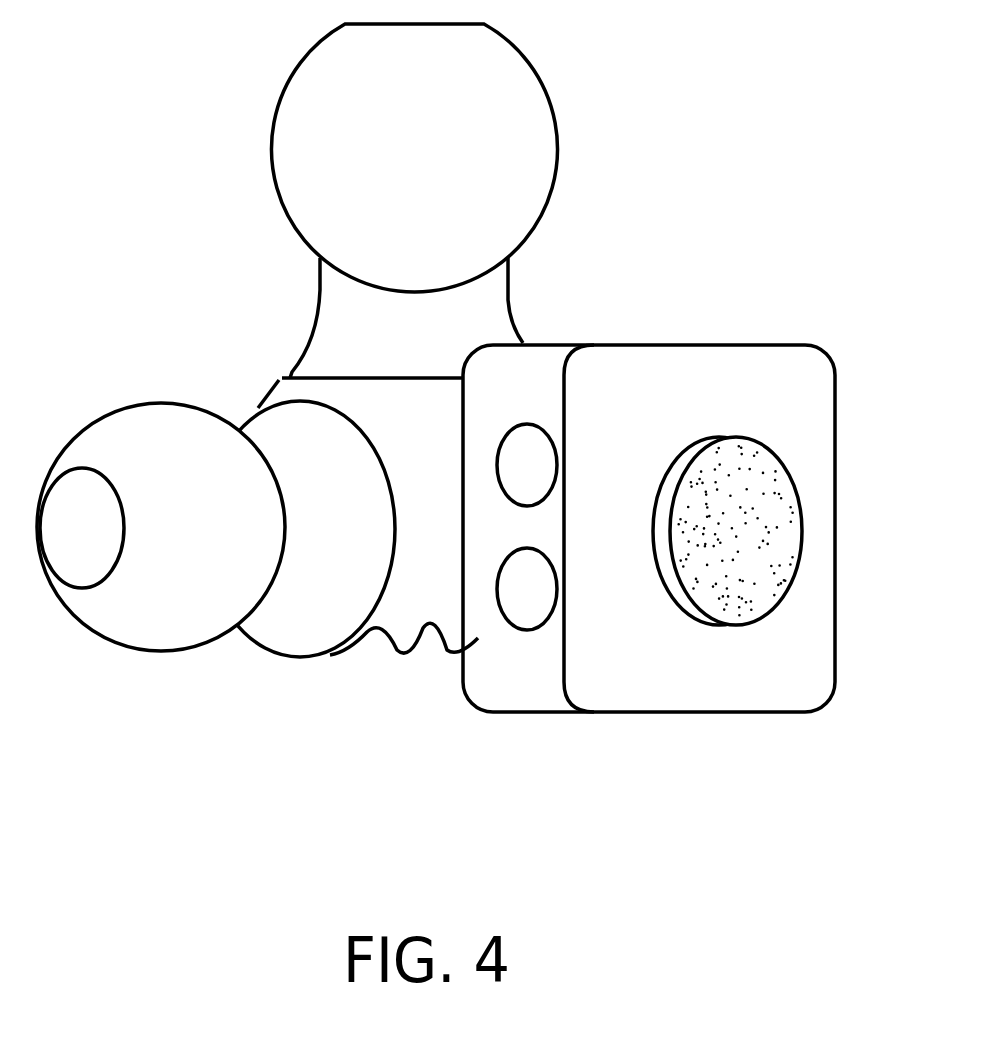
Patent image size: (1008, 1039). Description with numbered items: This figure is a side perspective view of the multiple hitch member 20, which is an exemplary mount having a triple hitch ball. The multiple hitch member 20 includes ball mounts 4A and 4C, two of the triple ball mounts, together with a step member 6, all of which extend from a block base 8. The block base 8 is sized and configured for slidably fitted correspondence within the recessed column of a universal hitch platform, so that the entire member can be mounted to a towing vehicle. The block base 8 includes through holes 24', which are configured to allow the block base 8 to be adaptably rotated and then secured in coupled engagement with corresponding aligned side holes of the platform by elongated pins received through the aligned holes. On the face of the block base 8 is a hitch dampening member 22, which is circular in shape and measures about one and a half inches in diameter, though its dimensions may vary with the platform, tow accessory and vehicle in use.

The ball mount 4A is at (518, 92).
The ball mount 4C is at (157, 627).
The step member 6 is at (368, 642).
The block base 8 is at (795, 635).
The multiple hitch member 20 is at (640, 128).
The hitch dampening member 22 is at (793, 502).
The through hole 24' is at (464, 579).